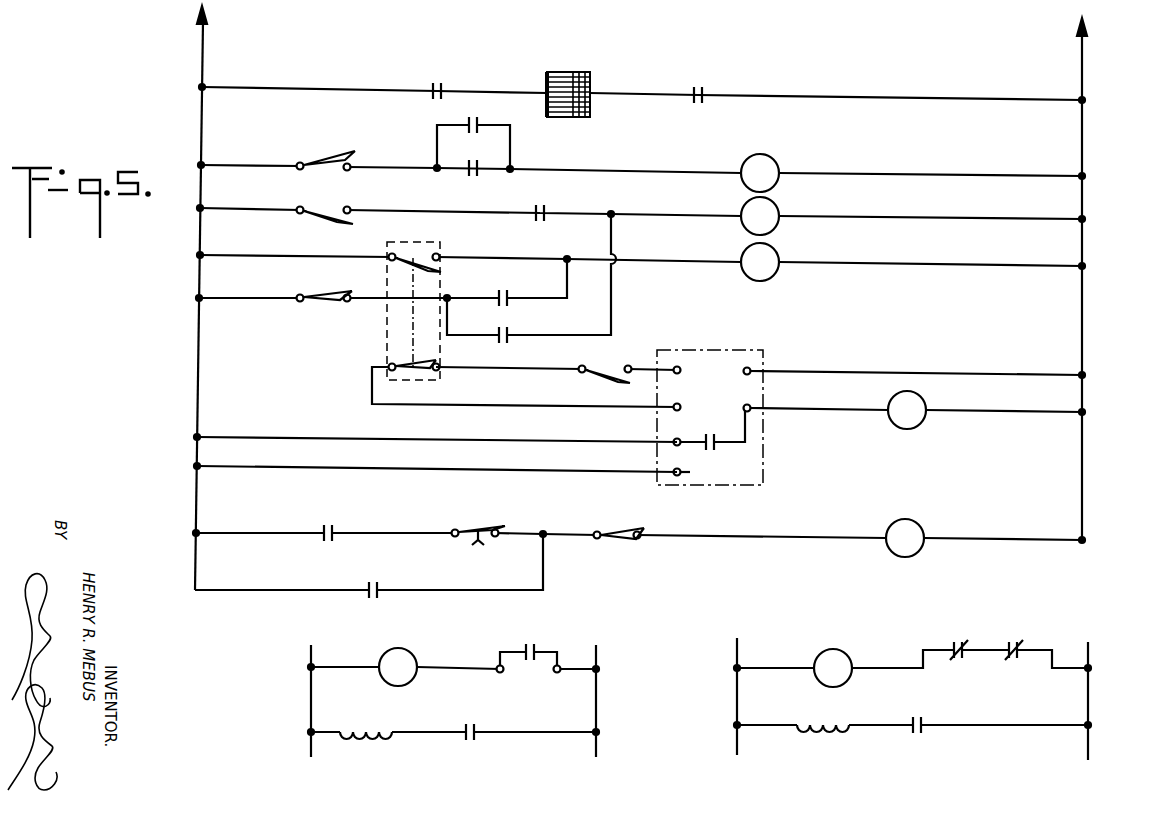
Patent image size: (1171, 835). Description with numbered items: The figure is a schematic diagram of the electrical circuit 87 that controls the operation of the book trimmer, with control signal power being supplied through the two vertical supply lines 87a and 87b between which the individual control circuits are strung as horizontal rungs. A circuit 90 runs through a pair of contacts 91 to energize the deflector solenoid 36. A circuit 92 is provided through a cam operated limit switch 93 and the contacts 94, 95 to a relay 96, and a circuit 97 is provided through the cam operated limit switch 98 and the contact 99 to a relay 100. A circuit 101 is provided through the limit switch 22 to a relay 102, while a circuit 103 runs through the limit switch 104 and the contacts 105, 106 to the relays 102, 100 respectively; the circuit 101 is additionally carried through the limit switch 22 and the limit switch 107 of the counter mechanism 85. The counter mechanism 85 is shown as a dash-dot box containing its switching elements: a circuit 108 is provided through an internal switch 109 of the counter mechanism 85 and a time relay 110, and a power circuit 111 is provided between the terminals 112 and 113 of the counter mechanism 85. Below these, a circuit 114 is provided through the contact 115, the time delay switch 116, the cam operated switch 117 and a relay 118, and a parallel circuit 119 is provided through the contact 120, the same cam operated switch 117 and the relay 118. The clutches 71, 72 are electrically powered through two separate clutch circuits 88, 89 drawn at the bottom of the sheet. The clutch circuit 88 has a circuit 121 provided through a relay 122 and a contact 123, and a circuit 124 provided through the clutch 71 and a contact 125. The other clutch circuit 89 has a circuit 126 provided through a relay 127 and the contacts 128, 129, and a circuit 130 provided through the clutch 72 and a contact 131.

The electrical circuit 87 is at (1158, 214).
The line 87a is at (200, 57).
The line 87b is at (1083, 72).
The circuit 90 is at (292, 90).
The contact 91 is at (441, 84).
The deflector solenoid 36 is at (590, 74).
The circuit 92 is at (242, 165).
The cam operated limit switch 93 is at (323, 156).
The contact 94 is at (478, 165).
The contact 95 is at (478, 124).
The relay 96 is at (760, 173).
The circuit 97 is at (243, 208).
The cam operated limit switch 98 is at (320, 210).
The contact 99 is at (545, 212).
The relay 100 is at (760, 216).
The circuit 101 is at (241, 255).
The limit switch 22 is at (441, 249).
The relay 102 is at (760, 262).
The circuit 103 is at (240, 298).
The limit switch 104 is at (322, 290).
The contact 105 is at (500, 291).
The contact 106 is at (508, 334).
The limit switch 107 is at (606, 369).
The counter mechanism 85 is at (792, 342).
The terminal 113 is at (746, 375).
The circuit 108 is at (254, 437).
The internal switch 109 is at (711, 436).
The time relay 110 is at (917, 410).
The power circuit 111 is at (252, 466).
The terminal 112 is at (708, 472).
The circuit 114 is at (248, 533).
The contact 115 is at (333, 526).
The time delay switch 116 is at (479, 518).
The cam operated switch 117 is at (619, 515).
The relay 118 is at (905, 538).
The circuit 119 is at (247, 590).
The contact 120 is at (386, 578).
The clutch circuit 88 is at (642, 698).
The circuit 121 is at (345, 665).
The relay 122 is at (398, 667).
The contact 123 is at (538, 646).
The circuit 124 is at (546, 730).
The contact 125 is at (466, 728).
The clutch 71 is at (370, 740).
The clutch circuit 89 is at (1156, 688).
The circuit 126 is at (770, 666).
The relay 127 is at (833, 668).
The contact 128 is at (962, 645).
The contact 129 is at (1018, 645).
The circuit 130 is at (766, 728).
The clutch 72 is at (838, 736).
The contact 131 is at (924, 722).